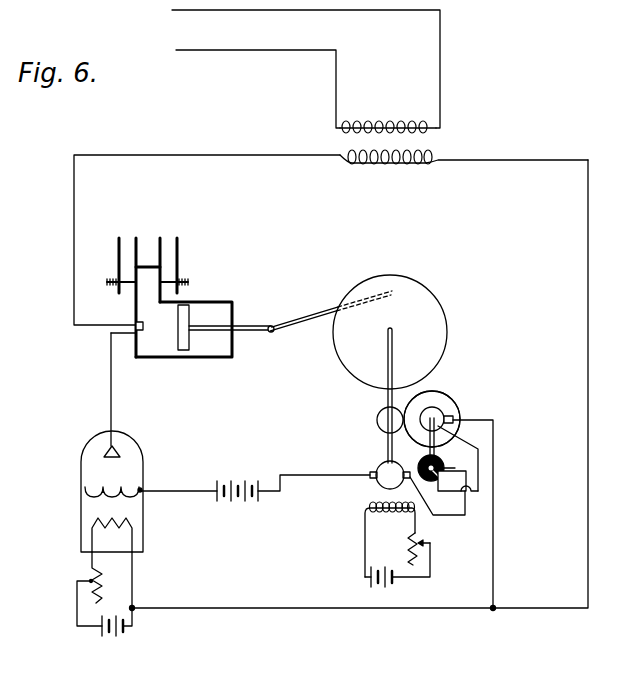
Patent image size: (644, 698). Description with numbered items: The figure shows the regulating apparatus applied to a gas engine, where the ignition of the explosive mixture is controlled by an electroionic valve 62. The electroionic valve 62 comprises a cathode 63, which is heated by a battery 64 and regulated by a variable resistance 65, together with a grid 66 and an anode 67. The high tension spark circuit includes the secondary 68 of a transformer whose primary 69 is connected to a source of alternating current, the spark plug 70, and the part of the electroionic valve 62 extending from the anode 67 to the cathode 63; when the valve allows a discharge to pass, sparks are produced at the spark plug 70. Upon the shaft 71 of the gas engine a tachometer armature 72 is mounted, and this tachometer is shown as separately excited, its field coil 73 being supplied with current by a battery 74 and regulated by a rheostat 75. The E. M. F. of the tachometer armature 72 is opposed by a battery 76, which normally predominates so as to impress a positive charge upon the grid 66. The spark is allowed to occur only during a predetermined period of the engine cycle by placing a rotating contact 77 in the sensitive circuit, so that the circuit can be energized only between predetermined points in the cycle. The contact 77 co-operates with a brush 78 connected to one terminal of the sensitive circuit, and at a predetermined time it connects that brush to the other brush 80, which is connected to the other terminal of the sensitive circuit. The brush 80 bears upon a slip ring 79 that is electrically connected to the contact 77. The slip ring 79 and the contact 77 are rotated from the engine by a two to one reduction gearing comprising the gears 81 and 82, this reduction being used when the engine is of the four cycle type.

The electroionic valve 62 is at (81, 505).
The cathode 63 is at (134, 528).
The battery 64 is at (108, 637).
The variable resistance 65 is at (88, 574).
The grid 66 is at (125, 489).
The anode 67 is at (120, 452).
The secondary 68 is at (393, 165).
The primary 69 is at (380, 124).
The spark plug 70 is at (144, 330).
The shaft 71 is at (387, 396).
The tachometer armature 72 is at (380, 464).
The field coil 73 is at (370, 503).
The battery 74 is at (368, 580).
The rheostat 75 is at (421, 533).
The battery 76 is at (232, 481).
The rotating contact 77 is at (438, 473).
The brush 78 is at (449, 470).
The slip ring 79 is at (426, 410).
The brush 80 is at (455, 421).
The gear 81 is at (377, 421).
The gear 82 is at (447, 404).